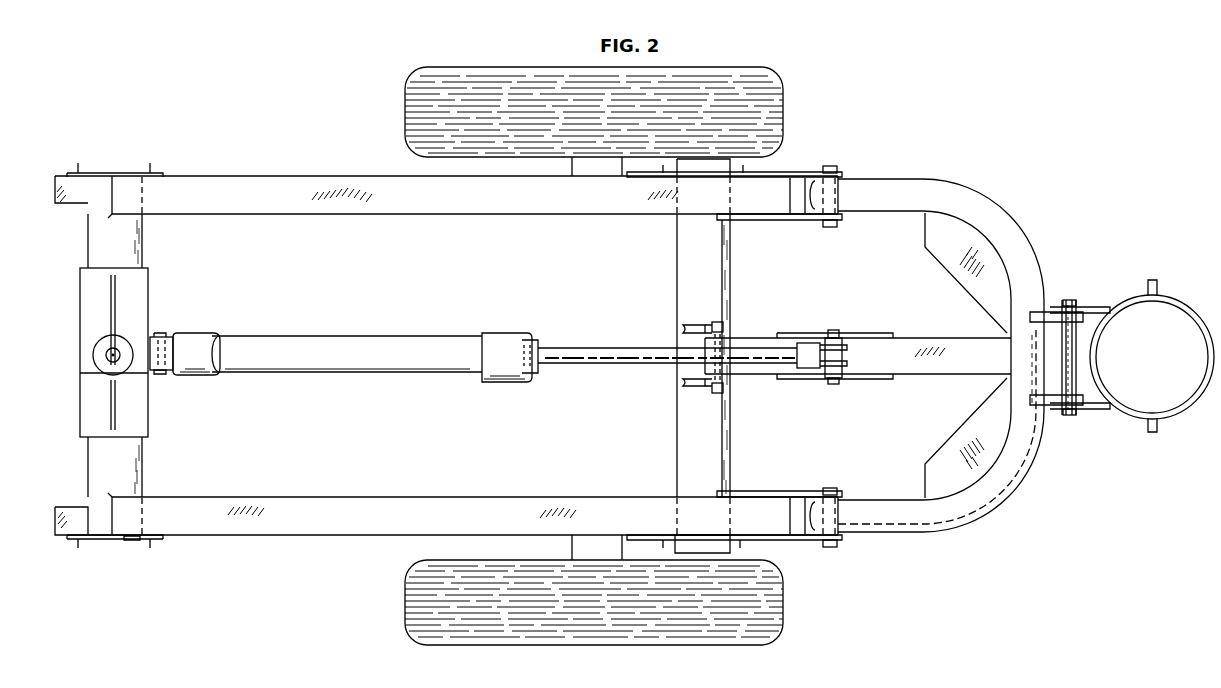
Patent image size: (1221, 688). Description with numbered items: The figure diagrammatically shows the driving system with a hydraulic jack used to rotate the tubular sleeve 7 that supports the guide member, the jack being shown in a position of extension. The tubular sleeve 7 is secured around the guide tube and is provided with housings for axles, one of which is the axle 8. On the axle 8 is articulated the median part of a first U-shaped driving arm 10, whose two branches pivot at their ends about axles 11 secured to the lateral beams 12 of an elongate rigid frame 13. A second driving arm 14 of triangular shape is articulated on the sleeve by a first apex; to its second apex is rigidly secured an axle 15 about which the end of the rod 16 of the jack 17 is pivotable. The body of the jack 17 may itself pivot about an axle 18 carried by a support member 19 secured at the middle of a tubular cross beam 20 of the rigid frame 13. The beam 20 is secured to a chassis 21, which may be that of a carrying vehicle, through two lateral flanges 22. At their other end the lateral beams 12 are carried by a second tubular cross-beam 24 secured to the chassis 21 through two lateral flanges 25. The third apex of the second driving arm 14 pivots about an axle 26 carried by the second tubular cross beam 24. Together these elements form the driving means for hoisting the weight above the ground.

The tubular sleeve 7 is at (1128, 299).
The axle 8 is at (1068, 300).
The first U-shaped driving arm 10 is at (1018, 228).
The axles 11 is at (829, 166).
The lateral beams 12 is at (326, 177).
The elongate rigid frame 13 is at (288, 142).
The second driving arm 14 is at (900, 374).
The axle 15 is at (833, 386).
The rod 16 is at (584, 360).
The jack 17 is at (371, 322).
The axle 18 is at (163, 374).
The support member 19 is at (140, 322).
The tubular cross beam 20 is at (100, 512).
The chassis 21 is at (66, 173).
The lateral flanges 22 is at (132, 540).
The second tubular cross-beam 24 is at (722, 452).
The lateral flanges 25 is at (653, 533).
The axle 26 is at (724, 394).